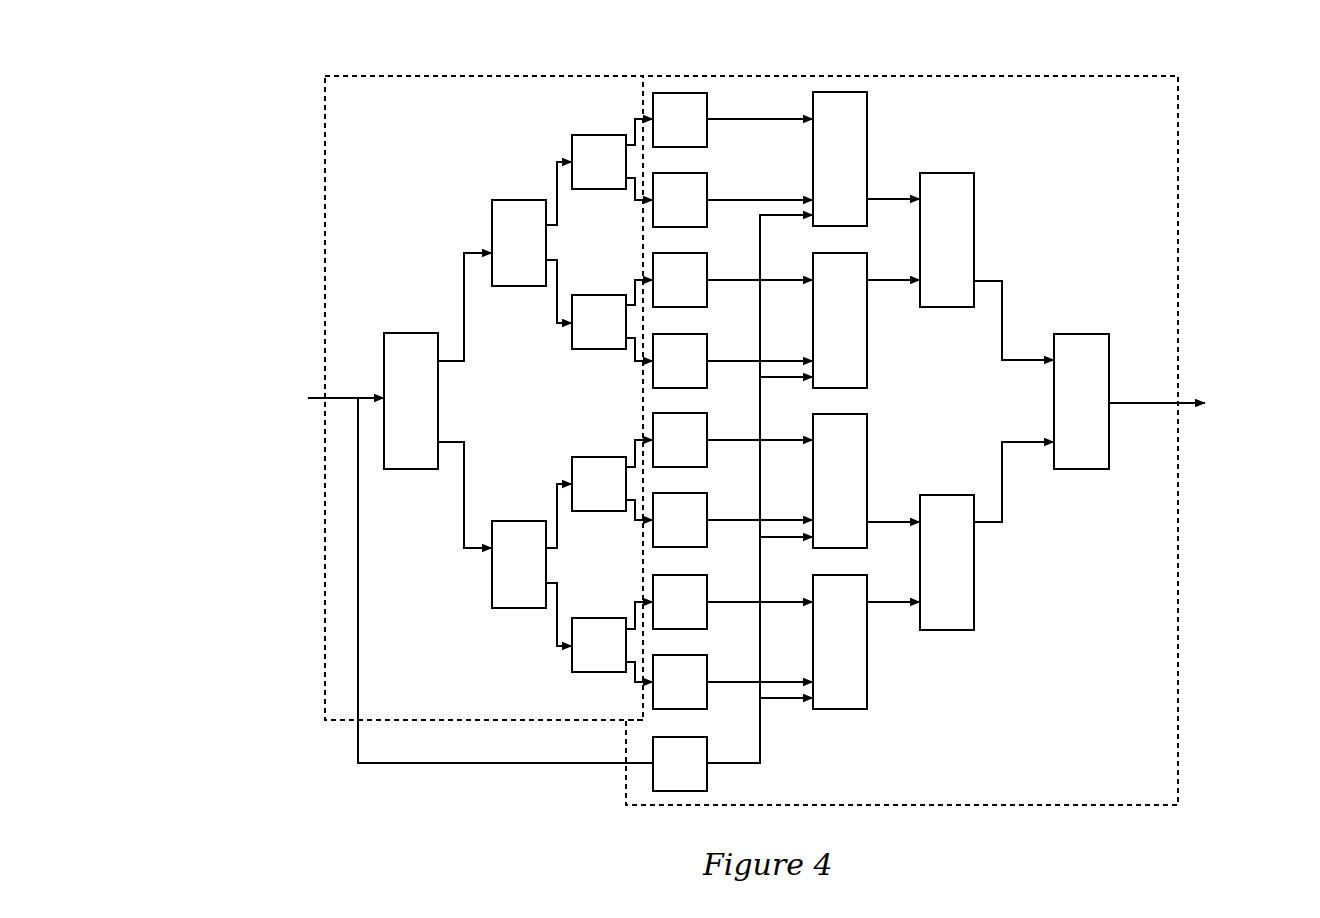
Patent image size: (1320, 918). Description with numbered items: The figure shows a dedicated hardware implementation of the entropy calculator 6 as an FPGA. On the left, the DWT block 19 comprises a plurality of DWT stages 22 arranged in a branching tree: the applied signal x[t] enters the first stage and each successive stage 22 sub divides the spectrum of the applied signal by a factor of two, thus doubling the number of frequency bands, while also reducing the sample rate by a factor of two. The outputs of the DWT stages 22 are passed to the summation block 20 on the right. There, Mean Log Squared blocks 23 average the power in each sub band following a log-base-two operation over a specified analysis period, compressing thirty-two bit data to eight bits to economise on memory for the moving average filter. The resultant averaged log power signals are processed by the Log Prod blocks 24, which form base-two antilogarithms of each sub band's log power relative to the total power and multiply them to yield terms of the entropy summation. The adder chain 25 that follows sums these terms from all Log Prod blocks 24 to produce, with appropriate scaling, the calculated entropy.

The entropy calculator 6 is at (279, 133).
The DWT block 19 is at (317, 277).
The summation block 20 is at (1180, 168).
The DWT stage 22 is at (505, 441).
The Mean Log Squared block 23 is at (733, 442).
The Log Prod block 24 is at (866, 400).
The adder chain 25 is at (1052, 613).